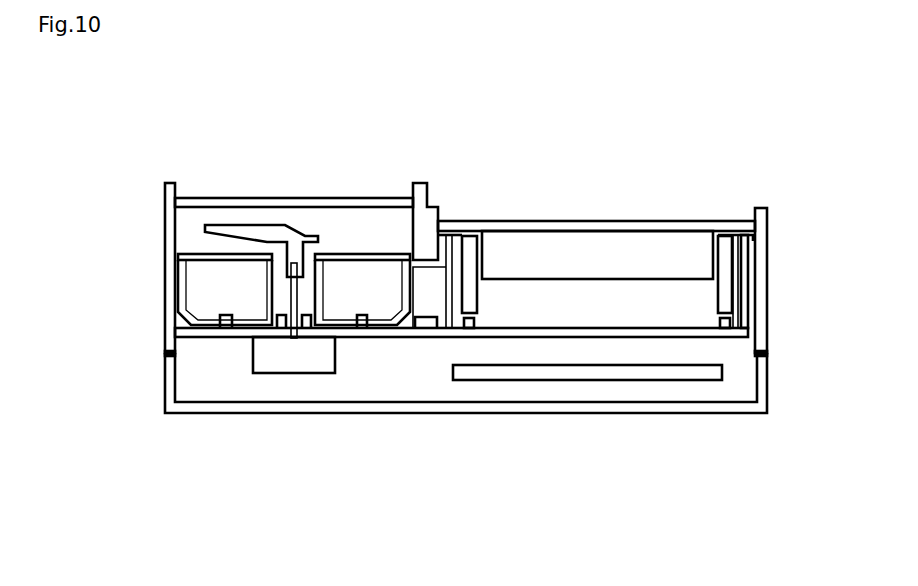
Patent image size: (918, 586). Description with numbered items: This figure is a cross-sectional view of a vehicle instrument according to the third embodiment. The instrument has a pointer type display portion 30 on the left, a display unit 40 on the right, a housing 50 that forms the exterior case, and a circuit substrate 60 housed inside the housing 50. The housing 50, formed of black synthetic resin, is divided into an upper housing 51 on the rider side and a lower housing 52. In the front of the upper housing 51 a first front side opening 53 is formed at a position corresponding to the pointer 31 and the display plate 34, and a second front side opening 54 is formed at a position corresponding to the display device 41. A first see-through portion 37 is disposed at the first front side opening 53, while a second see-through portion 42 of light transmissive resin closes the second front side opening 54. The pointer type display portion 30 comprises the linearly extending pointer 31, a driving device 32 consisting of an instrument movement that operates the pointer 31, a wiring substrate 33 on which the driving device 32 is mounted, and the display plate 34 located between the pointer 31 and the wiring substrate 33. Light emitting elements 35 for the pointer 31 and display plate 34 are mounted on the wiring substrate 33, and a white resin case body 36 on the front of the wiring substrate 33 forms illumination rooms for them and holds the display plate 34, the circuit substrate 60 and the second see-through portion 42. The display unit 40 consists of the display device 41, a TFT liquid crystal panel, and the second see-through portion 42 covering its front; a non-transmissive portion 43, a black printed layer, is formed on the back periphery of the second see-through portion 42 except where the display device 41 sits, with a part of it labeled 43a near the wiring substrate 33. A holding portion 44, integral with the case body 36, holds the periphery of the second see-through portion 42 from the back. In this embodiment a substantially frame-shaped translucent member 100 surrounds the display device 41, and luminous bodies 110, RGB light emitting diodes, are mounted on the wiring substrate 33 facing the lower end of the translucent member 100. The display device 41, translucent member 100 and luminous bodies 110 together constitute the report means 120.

The pointer type display portion 30 is at (308, 166).
The pointer 31 is at (252, 228).
The driving device 32 is at (275, 368).
The wiring substrate 33 is at (208, 334).
The display plate 34 is at (357, 260).
The light emitting elements 35 is at (304, 329).
The case body 36 is at (180, 295).
The first see-through portion 37 is at (208, 203).
The display unit 40 is at (596, 348).
The display device 41 is at (668, 180).
The second see-through portion 42 is at (630, 232).
The non-transmissive portion 43 is at (452, 235).
The frame leg 43a is at (422, 328).
The holding portion 44 is at (744, 263).
The housing 50 is at (457, 303).
The upper housing 51 is at (172, 240).
The lower housing 52 is at (402, 410).
The first front side opening 53 is at (411, 191).
The second front side opening 54 is at (749, 213).
The circuit substrate 60 is at (647, 373).
The translucent member 100 is at (468, 253).
The luminous body 110 is at (470, 331).
The report means 120 is at (543, 540).